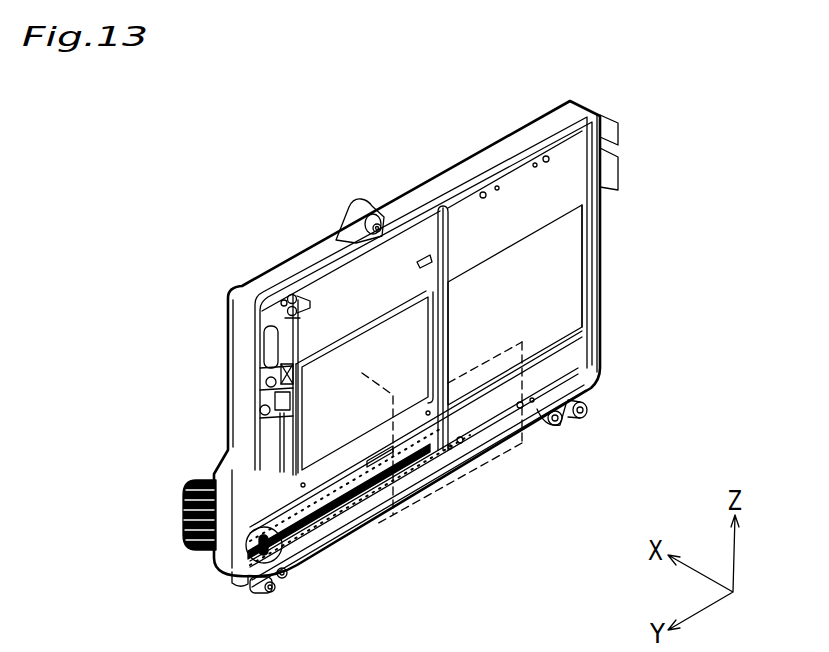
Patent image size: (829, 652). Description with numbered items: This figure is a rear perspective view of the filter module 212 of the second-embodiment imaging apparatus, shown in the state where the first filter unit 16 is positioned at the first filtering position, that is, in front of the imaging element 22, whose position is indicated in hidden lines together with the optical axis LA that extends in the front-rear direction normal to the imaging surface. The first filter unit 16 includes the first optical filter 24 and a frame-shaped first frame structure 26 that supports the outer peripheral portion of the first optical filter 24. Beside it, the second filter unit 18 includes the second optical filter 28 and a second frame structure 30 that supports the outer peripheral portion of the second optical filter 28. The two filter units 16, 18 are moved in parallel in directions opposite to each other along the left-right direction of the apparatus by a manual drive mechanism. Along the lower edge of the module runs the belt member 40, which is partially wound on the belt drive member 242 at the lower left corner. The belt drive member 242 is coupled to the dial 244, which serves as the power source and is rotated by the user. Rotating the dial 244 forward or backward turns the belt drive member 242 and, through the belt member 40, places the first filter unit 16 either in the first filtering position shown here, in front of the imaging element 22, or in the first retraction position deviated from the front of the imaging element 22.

The filter module 212 is at (300, 171).
The optical axis LA is at (223, 295).
The first frame structure 26 is at (420, 259).
The second filter unit 18 is at (571, 278).
The first filter unit 16 is at (411, 337).
The second optical filter 28 is at (571, 318).
The second frame structure 30 is at (584, 363).
The first optical filter 24 is at (323, 389).
The dial 244 is at (203, 497).
The belt member 40 is at (330, 518).
The belt drive member 242 is at (272, 550).
The imaging element 22 is at (472, 437).